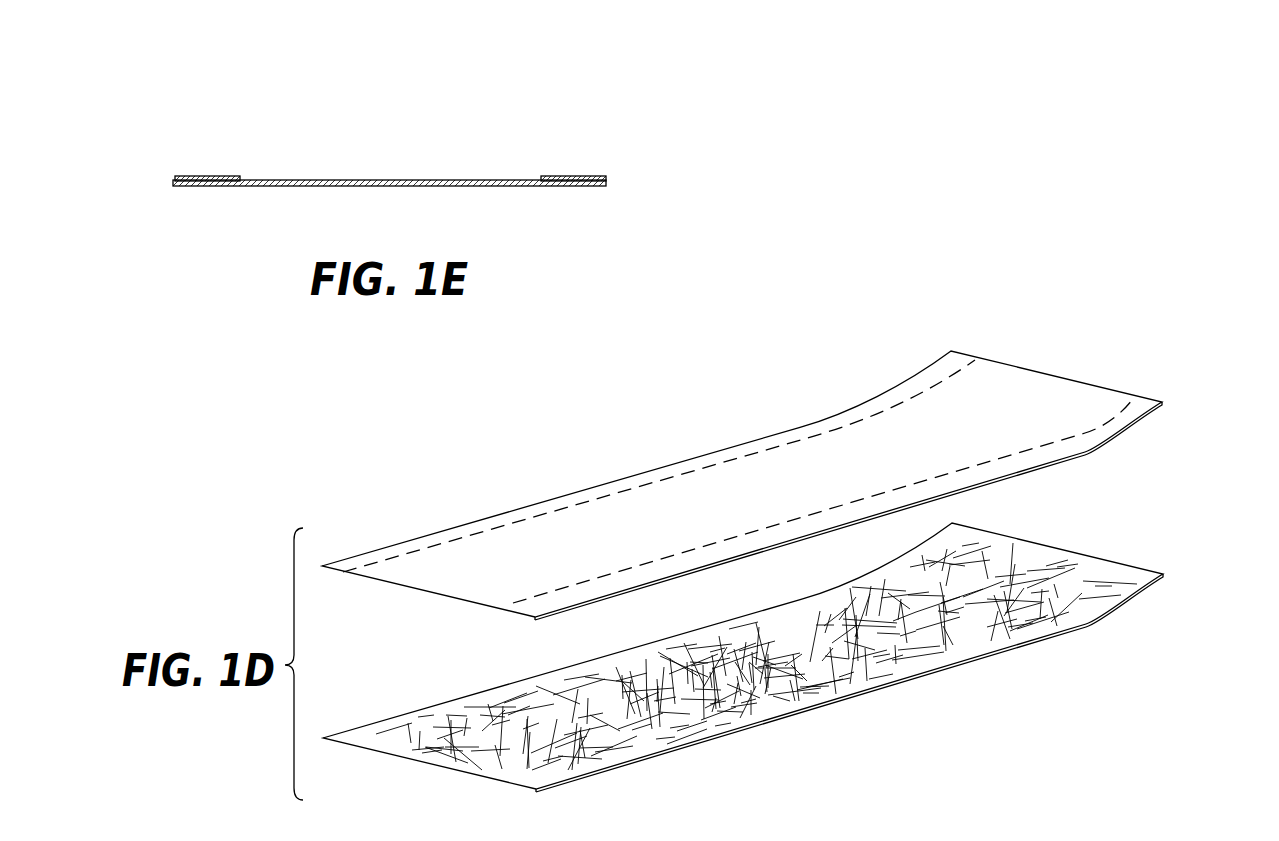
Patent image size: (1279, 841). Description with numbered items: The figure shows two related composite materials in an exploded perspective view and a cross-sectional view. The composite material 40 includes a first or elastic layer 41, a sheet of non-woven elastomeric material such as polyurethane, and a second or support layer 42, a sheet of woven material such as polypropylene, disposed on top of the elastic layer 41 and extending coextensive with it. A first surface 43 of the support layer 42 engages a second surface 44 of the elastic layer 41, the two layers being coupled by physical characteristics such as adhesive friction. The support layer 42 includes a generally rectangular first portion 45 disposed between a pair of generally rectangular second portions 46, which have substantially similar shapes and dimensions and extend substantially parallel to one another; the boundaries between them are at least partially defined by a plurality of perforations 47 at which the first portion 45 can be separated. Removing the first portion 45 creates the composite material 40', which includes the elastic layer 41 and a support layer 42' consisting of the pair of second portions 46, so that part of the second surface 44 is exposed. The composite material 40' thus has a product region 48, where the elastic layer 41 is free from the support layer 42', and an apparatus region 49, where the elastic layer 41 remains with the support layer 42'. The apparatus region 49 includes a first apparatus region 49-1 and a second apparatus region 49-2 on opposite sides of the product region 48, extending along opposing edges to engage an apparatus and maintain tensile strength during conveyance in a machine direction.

In FIG. 1D, the composite material 40 is at (1185, 320).
In FIG. 1E, the composite material 40' is at (650, 69).
In FIG. 1E, the elastic layer 41 is at (475, 187).
In FIG. 1D, the elastic layer 41 is at (1045, 577).
In FIG. 1D, the support layer 42 is at (742, 479).
In FIG. 1E, the support layer 42' is at (530, 156).
In FIG. 1E, the first surface 43 is at (199, 187).
In FIG. 1D, the first surface 43 is at (1101, 451).
In FIG. 1E, the second surface 44 is at (297, 180).
In FIG. 1D, the second surface 44 is at (766, 681).
In FIG. 1D, the first portion 45 is at (423, 573).
In FIG. 1D, the second portion 46 is at (535, 600).
In FIG. 1D, the perforations 47 is at (496, 529).
In FIG. 1E, the product region 48 is at (316, 187).
In FIG. 1E, the apparatus region 49 is at (577, 188).
In FIG. 1E, the first apparatus region 49-1 is at (205, 175).
In FIG. 1E, the second apparatus region 49-2 is at (577, 175).